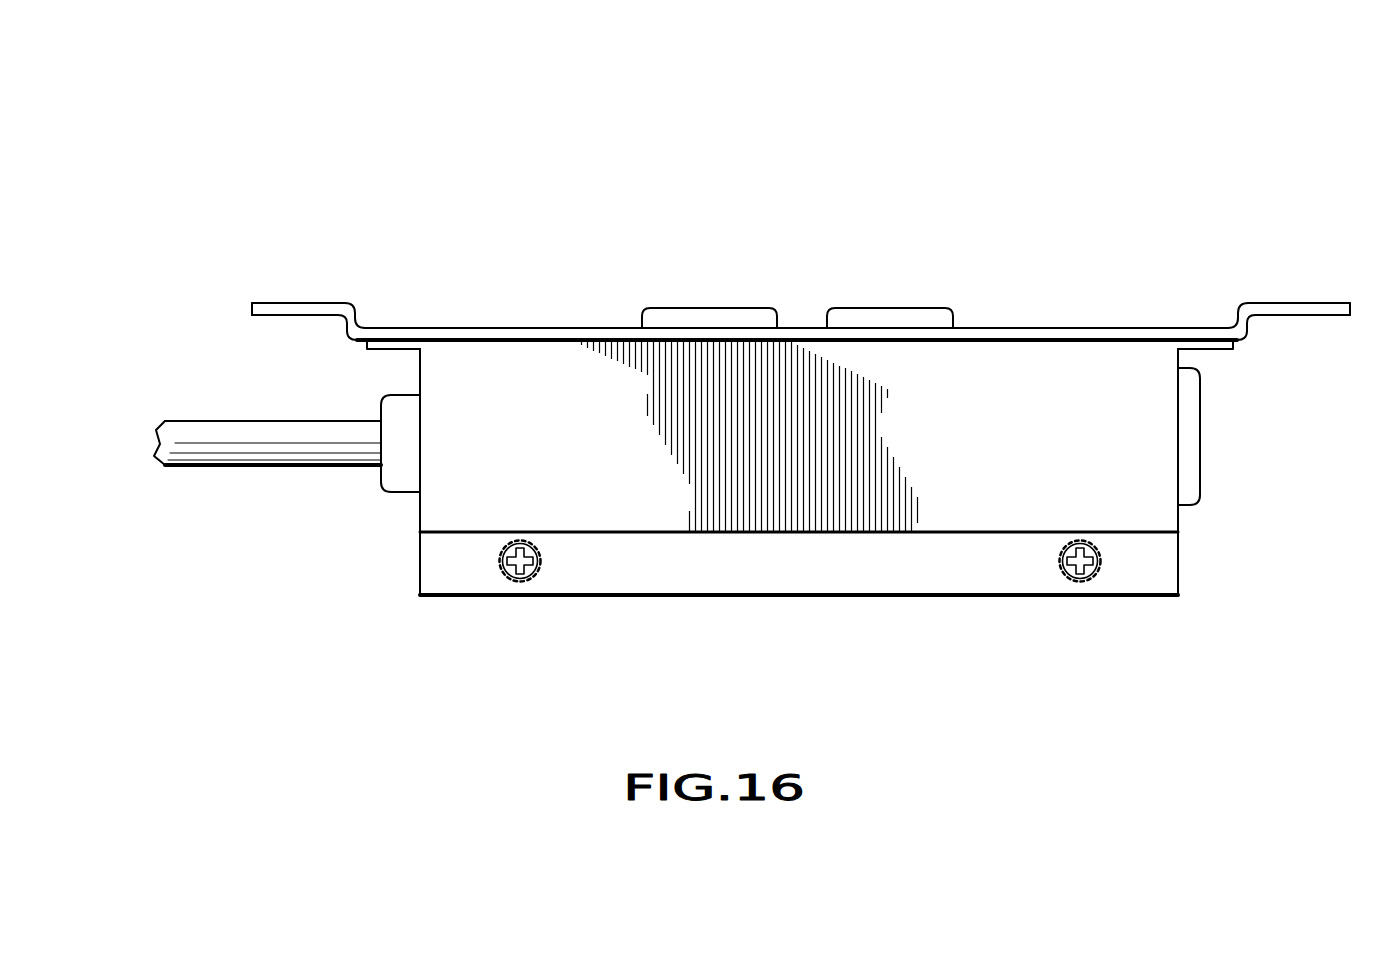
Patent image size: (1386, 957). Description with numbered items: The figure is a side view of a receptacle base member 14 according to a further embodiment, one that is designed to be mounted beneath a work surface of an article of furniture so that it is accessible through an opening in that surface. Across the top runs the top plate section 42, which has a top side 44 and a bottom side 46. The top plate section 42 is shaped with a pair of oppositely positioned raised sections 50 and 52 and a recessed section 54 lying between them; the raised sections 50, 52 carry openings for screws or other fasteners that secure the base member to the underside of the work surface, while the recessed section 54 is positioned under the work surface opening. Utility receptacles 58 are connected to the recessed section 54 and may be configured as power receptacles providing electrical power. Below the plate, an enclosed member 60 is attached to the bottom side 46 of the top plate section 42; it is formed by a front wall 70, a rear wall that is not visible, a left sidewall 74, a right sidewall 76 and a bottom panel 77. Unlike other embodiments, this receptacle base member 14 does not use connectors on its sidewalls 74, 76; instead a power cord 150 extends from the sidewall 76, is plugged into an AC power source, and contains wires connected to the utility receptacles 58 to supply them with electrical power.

The receptacle base member 14 is at (563, 142).
The top plate section 42 is at (1063, 328).
The top side 44 is at (445, 328).
The bottom side 46 is at (378, 349).
The raised section 50 is at (287, 303).
The raised section 52 is at (1307, 303).
The recessed section 54 is at (548, 328).
The utility receptacle 58 is at (717, 308).
The enclosed member 60 is at (660, 595).
The front wall 70 is at (812, 503).
The left sidewall 74 is at (1178, 362).
The right sidewall 76 is at (420, 515).
The bottom panel 77 is at (965, 595).
The power cord 150 is at (187, 421).